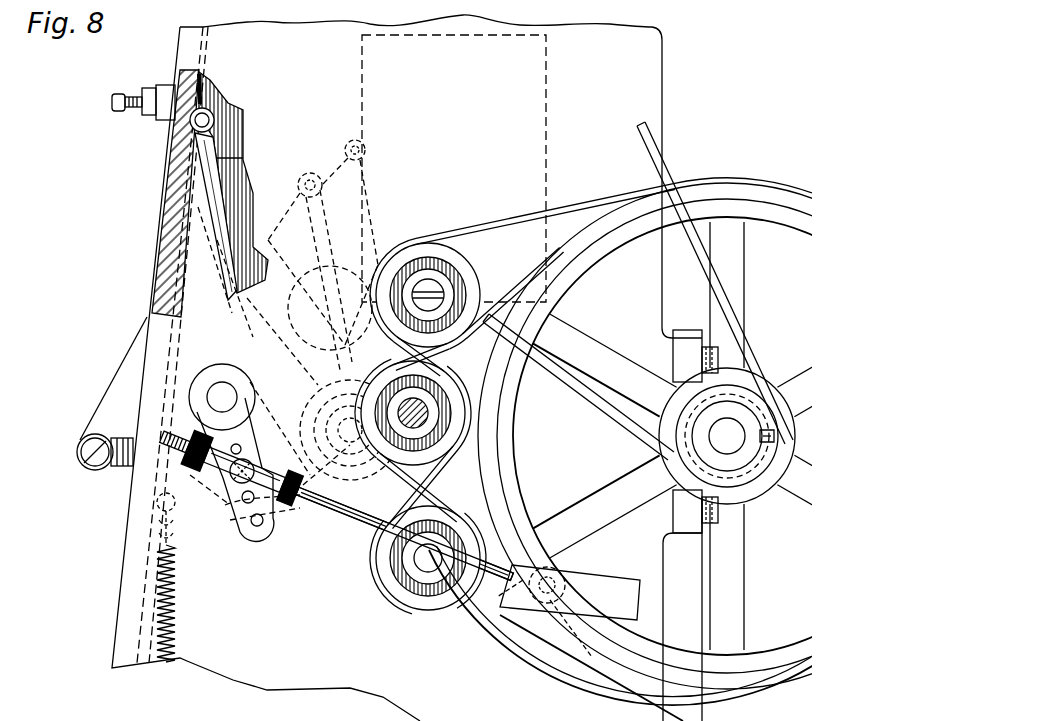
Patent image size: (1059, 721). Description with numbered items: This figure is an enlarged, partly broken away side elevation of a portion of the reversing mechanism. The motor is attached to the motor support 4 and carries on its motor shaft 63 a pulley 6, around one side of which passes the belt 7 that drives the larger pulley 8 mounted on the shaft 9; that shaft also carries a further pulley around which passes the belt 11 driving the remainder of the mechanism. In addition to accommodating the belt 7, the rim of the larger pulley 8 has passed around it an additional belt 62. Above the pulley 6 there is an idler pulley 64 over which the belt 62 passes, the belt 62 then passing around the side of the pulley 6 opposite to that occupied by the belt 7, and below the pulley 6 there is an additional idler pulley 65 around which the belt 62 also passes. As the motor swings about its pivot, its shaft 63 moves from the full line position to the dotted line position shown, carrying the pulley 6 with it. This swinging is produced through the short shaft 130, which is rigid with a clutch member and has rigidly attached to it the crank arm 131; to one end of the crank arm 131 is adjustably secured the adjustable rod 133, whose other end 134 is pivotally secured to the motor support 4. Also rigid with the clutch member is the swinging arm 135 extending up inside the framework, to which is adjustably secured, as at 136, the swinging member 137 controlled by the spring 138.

The motor support 4 is at (612, 582).
The pulley 6 is at (420, 370).
The belt 7 is at (503, 288).
The larger pulley 8 is at (506, 455).
The shaft 9 is at (718, 430).
The belt 11 is at (723, 308).
The additional belt 62 is at (489, 226).
The motor shaft 63 is at (428, 404).
The idler pulley 64 is at (466, 268).
The additional idler pulley 65 is at (445, 510).
The short shaft 130 is at (224, 395).
The crank arm 131 is at (243, 418).
The adjustable rod 133 is at (370, 518).
The other end of adjustable rod 134 is at (560, 578).
The swinging arm 135 is at (190, 273).
The adjustable securing point 136 is at (309, 172).
The swinging member 137 is at (352, 222).
The spring 138 is at (215, 578).